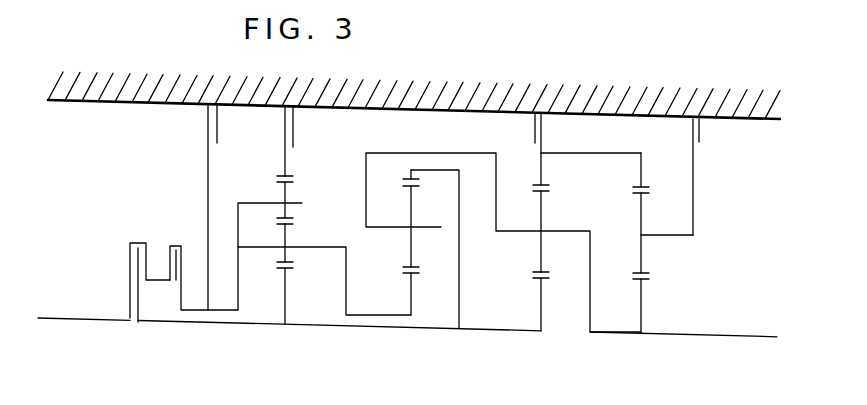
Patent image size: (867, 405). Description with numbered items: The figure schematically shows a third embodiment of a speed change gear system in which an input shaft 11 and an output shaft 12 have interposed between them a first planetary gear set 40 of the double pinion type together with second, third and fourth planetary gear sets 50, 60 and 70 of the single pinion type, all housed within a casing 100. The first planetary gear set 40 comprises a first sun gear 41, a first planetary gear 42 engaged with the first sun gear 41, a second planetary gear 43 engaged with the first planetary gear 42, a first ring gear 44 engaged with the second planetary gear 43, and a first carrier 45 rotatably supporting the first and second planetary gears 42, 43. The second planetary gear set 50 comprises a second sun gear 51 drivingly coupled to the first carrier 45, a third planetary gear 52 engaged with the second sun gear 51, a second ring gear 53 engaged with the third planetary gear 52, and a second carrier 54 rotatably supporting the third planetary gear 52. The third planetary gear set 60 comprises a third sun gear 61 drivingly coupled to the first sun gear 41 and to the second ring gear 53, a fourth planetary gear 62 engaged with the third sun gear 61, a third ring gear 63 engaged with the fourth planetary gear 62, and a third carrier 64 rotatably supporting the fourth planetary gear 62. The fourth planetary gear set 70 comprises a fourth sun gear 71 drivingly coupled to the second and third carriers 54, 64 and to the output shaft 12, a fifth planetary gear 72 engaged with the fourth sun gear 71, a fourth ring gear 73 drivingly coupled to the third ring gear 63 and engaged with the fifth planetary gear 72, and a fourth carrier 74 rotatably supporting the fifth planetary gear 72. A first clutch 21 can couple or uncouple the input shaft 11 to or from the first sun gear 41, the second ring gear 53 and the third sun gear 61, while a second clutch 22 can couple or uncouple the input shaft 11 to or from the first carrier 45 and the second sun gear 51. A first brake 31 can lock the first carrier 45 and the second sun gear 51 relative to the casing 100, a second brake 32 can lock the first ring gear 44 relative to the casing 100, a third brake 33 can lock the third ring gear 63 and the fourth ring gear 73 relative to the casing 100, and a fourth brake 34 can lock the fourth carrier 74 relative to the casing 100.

The casing 100 is at (413, 96).
The input shaft 11 is at (86, 320).
The output shaft 12 is at (701, 336).
The first clutch 21 is at (138, 241).
The second clutch 22 is at (181, 219).
The first brake 31 is at (206, 125).
The second brake 32 is at (283, 121).
The third brake 33 is at (547, 121).
The fourth brake 34 is at (700, 124).
The first planetary gear set 40 is at (324, 252).
The first sun gear 41 is at (283, 288).
The first planetary gear 42 is at (292, 258).
The second planetary gear 43 is at (293, 213).
The first ring gear 44 is at (292, 160).
The first carrier 45 is at (269, 178).
The second planetary gear set 50 is at (503, 257).
The second sun gear 51 is at (424, 291).
The third planetary gear 52 is at (413, 243).
The second ring gear 53 is at (416, 172).
The second carrier 54 is at (394, 196).
The third planetary gear set 60 is at (573, 257).
The third sun gear 61 is at (560, 338).
The fourth planetary gear 62 is at (543, 243).
The third ring gear 63 is at (543, 168).
The third carrier 64 is at (517, 210).
The fourth planetary gear set 70 is at (663, 258).
The fourth sun gear 71 is at (663, 340).
The fifth planetary gear 72 is at (645, 245).
The fourth ring gear 73 is at (645, 158).
The fourth carrier 74 is at (656, 205).